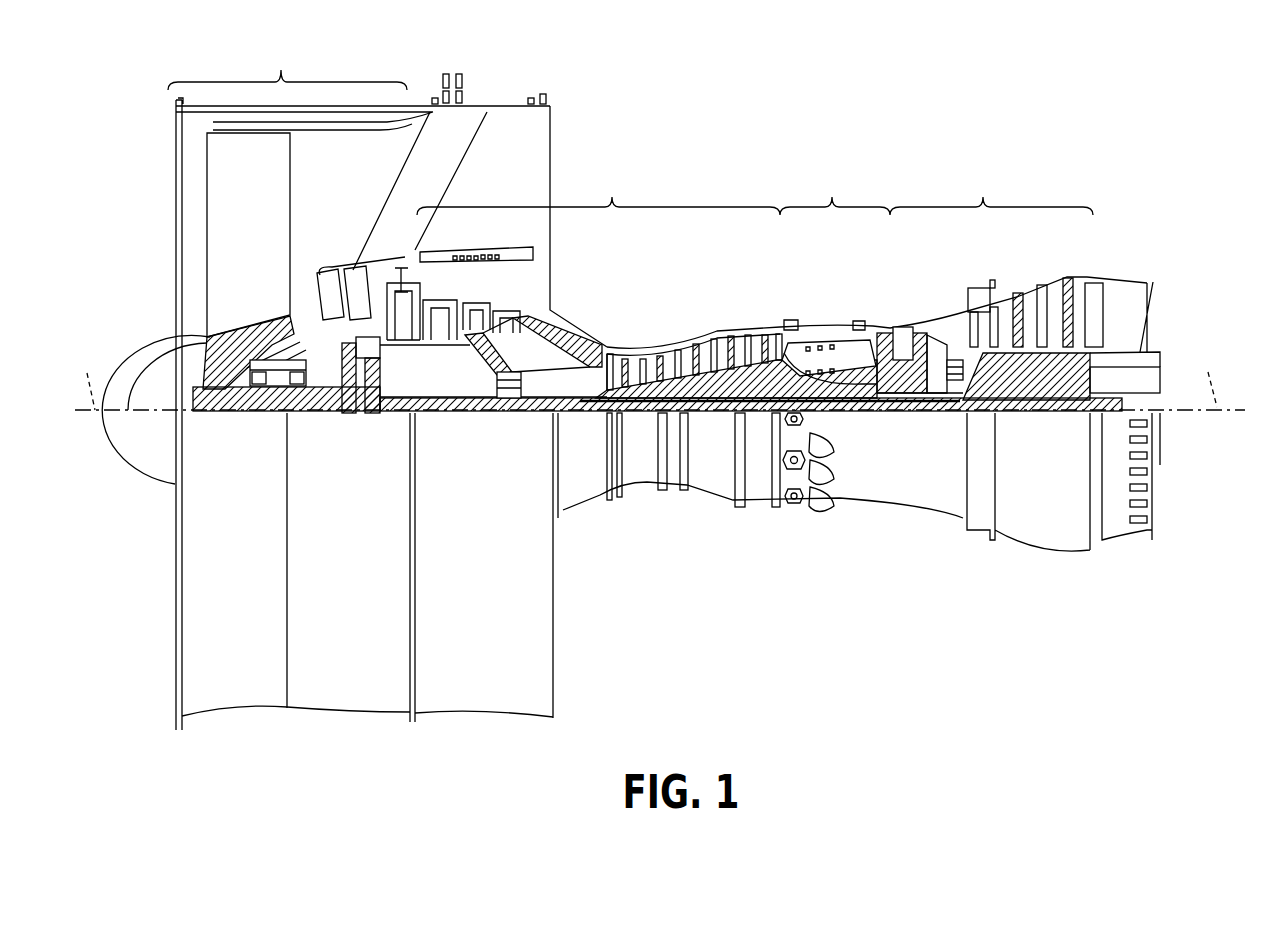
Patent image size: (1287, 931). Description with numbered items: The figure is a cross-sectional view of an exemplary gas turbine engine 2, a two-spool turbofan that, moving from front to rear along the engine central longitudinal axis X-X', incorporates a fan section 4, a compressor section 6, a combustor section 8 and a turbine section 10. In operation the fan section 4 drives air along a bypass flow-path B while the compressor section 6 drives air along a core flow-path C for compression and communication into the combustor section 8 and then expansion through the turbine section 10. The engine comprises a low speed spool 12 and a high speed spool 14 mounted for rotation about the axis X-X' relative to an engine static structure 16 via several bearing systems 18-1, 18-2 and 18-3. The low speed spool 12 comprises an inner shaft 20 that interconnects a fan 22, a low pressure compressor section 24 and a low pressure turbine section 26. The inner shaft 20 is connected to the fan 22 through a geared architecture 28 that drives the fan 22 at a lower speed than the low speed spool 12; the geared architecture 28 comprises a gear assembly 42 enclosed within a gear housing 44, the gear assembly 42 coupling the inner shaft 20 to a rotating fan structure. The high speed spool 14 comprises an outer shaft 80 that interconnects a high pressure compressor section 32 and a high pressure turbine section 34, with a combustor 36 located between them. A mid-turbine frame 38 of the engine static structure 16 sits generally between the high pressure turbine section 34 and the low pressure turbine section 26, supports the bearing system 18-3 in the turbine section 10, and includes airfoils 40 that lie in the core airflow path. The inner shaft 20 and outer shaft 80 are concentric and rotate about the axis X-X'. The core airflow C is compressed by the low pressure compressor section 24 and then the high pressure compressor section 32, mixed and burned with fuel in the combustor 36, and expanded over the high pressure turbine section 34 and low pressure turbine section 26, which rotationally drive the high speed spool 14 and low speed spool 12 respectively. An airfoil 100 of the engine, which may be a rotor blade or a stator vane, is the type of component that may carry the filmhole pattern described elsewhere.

The gas turbine engine 2 is at (882, 140).
The fan section 4 is at (387, 385).
The compressor section 6 is at (755, 262).
The combustor section 8 is at (824, 250).
The turbine section 10 is at (1062, 259).
The low speed spool 12 is at (719, 428).
The high speed spool 14 is at (757, 380).
The engine static structure 16 is at (347, 693).
The bearing system 18-1 is at (257, 395).
The bearing system 18-2 is at (508, 397).
The bearing system 18-3 is at (947, 393).
The inner shaft 20 is at (573, 410).
The fan 22 is at (234, 233).
The low pressure compressor section 24 is at (487, 310).
The low pressure turbine section 26 is at (1027, 297).
The geared architecture 28 is at (373, 428).
The high pressure compressor section 32 is at (697, 380).
The high pressure turbine section 34 is at (900, 327).
The combustor 36 is at (830, 350).
The mid-turbine frame 38 is at (950, 330).
The airfoils 40 is at (950, 333).
The gear assembly 42 is at (380, 395).
The gear housing 44 is at (380, 367).
The outer shaft 80 is at (873, 387).
The airfoil 100 is at (507, 318).
The bypass flow-path B is at (378, 187).
The core flow-path C is at (312, 293).
The engine central longitudinal axis X is at (86, 379).
The engine central longitudinal axis X' is at (1208, 374).